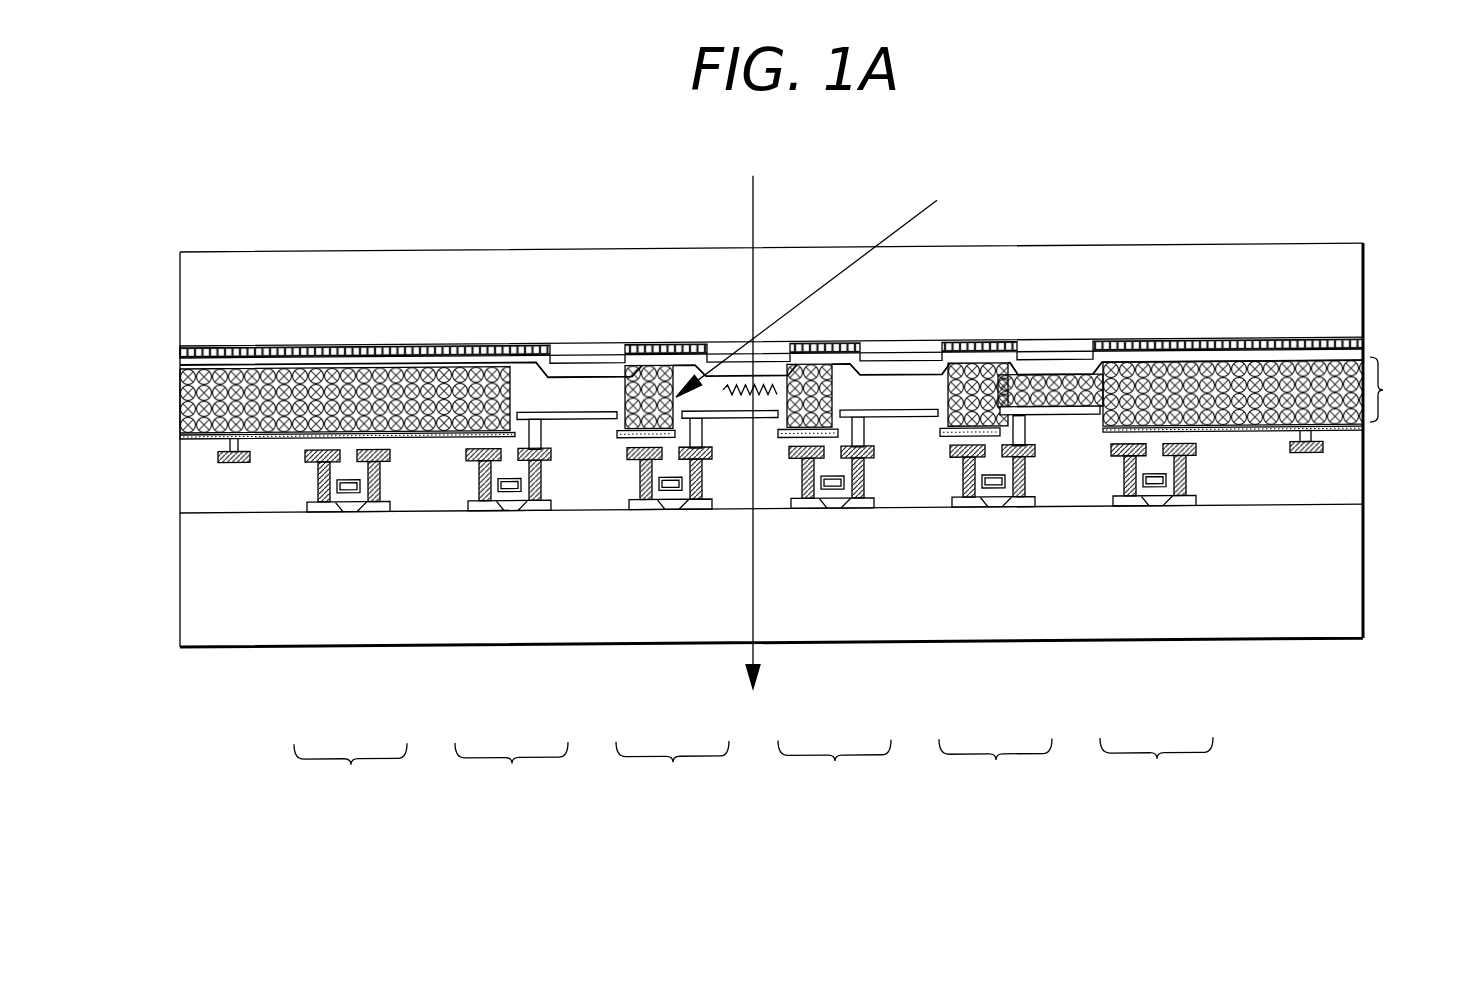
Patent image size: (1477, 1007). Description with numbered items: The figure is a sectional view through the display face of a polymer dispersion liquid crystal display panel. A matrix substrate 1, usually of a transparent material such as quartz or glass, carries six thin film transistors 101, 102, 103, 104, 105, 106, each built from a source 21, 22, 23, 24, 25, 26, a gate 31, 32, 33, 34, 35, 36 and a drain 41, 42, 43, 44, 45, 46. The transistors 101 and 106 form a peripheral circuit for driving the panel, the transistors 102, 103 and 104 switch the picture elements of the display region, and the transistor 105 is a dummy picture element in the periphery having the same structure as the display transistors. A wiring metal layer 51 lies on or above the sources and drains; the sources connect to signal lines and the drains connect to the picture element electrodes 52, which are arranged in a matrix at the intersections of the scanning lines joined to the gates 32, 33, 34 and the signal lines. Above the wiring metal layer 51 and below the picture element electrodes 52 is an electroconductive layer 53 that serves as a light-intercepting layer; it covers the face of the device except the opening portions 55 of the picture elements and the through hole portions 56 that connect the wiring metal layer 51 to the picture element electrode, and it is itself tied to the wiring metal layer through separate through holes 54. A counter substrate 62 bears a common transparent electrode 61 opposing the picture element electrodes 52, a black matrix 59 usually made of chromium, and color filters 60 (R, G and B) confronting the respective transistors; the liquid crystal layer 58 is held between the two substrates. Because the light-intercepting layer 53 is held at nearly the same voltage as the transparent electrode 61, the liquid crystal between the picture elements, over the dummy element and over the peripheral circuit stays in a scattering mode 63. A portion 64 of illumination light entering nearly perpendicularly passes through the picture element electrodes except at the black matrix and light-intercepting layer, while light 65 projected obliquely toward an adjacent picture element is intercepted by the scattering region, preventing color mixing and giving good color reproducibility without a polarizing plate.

The matrix substrate 1 is at (1335, 590).
The source 21 is at (321, 596).
The source 22 is at (482, 595).
The source 23 is at (643, 593).
The source 24 is at (805, 592).
The source 25 is at (966, 591).
The source 26 is at (1127, 590).
The gate 31 is at (350, 601).
The gate 32 is at (511, 599).
The gate 33 is at (672, 598).
The gate 34 is at (834, 597).
The gate 35 is at (995, 596).
The gate 36 is at (1156, 595).
The drain 41 is at (377, 595).
The drain 42 is at (538, 594).
The drain 43 is at (699, 593).
The drain 44 is at (861, 592).
The drain 45 is at (1022, 591).
The drain 46 is at (1183, 589).
The wiring metal layer 51 is at (318, 481).
The picture element electrodes 52 is at (608, 415).
The electroconductive layer 53 is at (277, 431).
The through holes 54 is at (228, 447).
The opening portions 55 is at (737, 403).
The through hole portions 56 is at (545, 415).
The organic electroluminescent layer 58 is at (1385, 399).
The black matrix 59 is at (1237, 347).
The color filters 60 is at (563, 349).
The transparent electrode 61 is at (1007, 364).
The counter substrate 62 is at (1173, 285).
The scattering mode liquid crystal 63 is at (410, 372).
The portion of illumination light 64 is at (760, 200).
The obliquely projected light 65 is at (905, 224).
The thin film transistor 101 is at (350, 608).
The thin film transistor 102 is at (511, 607).
The thin film transistor 103 is at (672, 606).
The thin film transistor 104 is at (834, 605).
The thin film transistor 105 is at (995, 603).
The thin film transistor 106 is at (1156, 602).